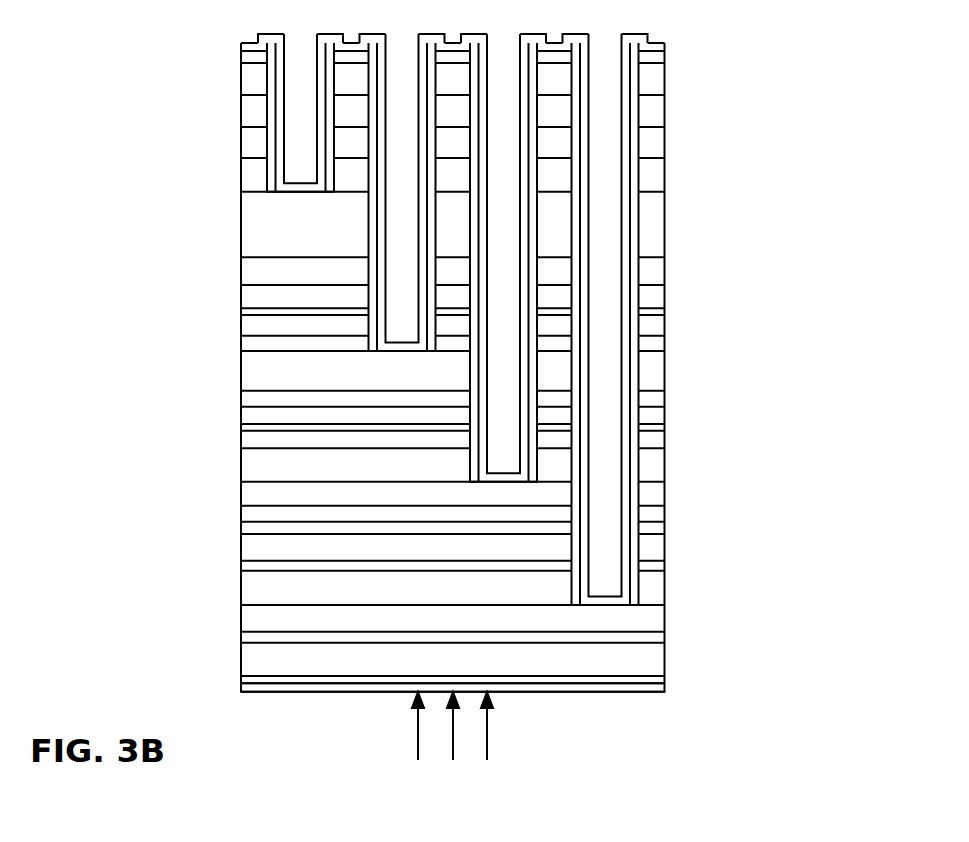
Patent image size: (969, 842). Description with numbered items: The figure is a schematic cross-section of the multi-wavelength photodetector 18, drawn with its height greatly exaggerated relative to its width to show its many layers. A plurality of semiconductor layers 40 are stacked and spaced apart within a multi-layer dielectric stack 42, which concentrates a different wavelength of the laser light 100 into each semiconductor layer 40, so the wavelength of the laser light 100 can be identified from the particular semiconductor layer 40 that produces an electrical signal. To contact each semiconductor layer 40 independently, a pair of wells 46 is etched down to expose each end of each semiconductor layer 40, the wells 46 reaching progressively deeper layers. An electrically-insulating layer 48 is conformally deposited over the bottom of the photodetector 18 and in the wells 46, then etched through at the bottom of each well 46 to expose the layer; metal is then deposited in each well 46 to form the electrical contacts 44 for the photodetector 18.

The multi-wavelength photodetector 18 is at (618, 703).
The semiconductor layer 40 is at (241, 619).
The multi-layer dielectric stack 42 is at (668, 63).
The electrical contact 44 is at (632, 31).
The well 46 is at (503, 48).
The electrically-insulating layer 48 is at (270, 60).
The laser light 100 is at (412, 736).